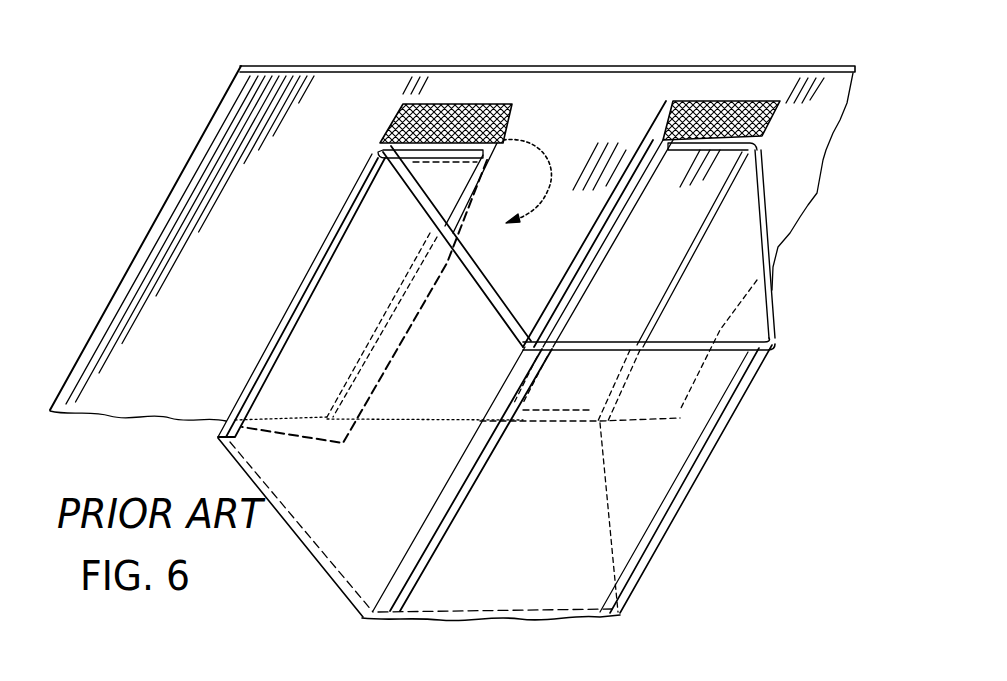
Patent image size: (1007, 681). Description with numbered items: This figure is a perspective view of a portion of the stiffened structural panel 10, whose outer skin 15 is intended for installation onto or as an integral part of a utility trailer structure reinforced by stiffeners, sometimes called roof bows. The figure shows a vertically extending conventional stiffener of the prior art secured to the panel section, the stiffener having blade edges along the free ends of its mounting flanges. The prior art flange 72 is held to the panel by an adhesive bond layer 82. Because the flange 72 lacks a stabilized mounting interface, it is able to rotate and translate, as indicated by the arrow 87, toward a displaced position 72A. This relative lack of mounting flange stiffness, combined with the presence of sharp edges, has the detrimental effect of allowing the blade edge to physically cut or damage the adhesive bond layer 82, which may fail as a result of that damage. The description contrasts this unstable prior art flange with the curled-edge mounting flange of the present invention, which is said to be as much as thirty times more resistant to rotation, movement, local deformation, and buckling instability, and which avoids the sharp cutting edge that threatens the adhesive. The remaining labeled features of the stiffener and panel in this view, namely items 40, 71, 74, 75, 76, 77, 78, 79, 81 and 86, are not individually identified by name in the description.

The stiffened structural panel 10 is at (584, 66).
The outer skin 15 is at (357, 66).
The side panel 40 is at (672, 513).
The first bracket member 71 is at (498, 142).
The flange 72 is at (775, 134).
The position 72A is at (190, 675).
The diagonal flange 74 is at (474, 212).
The bottom flange 75 is at (735, 352).
The side flange 76 is at (620, 204).
The end flange 77 is at (773, 267).
The hanging bracket 78 is at (374, 165).
The box body 79 is at (738, 439).
The first attachment tab 81 is at (474, 102).
The adhesive bond layer 82 is at (726, 100).
The divider panel 86 is at (335, 595).
The arrow 87 is at (542, 164).